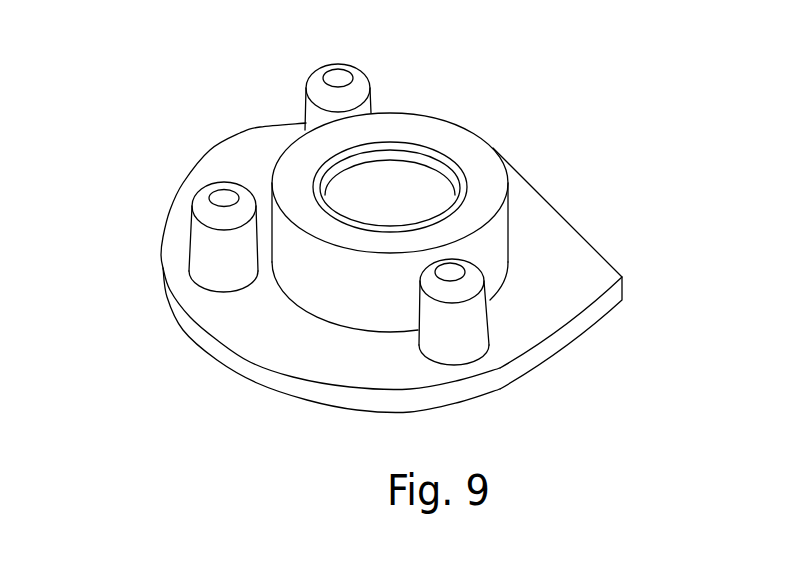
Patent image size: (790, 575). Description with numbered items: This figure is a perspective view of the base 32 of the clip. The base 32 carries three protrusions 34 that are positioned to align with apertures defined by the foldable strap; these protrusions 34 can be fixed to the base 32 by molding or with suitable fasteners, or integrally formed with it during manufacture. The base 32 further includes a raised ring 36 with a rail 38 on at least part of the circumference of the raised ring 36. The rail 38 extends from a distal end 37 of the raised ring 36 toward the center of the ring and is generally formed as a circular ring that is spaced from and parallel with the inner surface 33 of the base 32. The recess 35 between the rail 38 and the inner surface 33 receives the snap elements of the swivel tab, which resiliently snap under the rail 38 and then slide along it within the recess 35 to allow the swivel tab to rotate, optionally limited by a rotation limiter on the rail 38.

The base 32 is at (147, 208).
The inner surface 33 is at (557, 258).
The protrusions 34 is at (368, 76).
The recess 35 is at (414, 210).
The raised ring 36 is at (473, 145).
The distal end 37 is at (463, 196).
The rail 38 is at (403, 152).